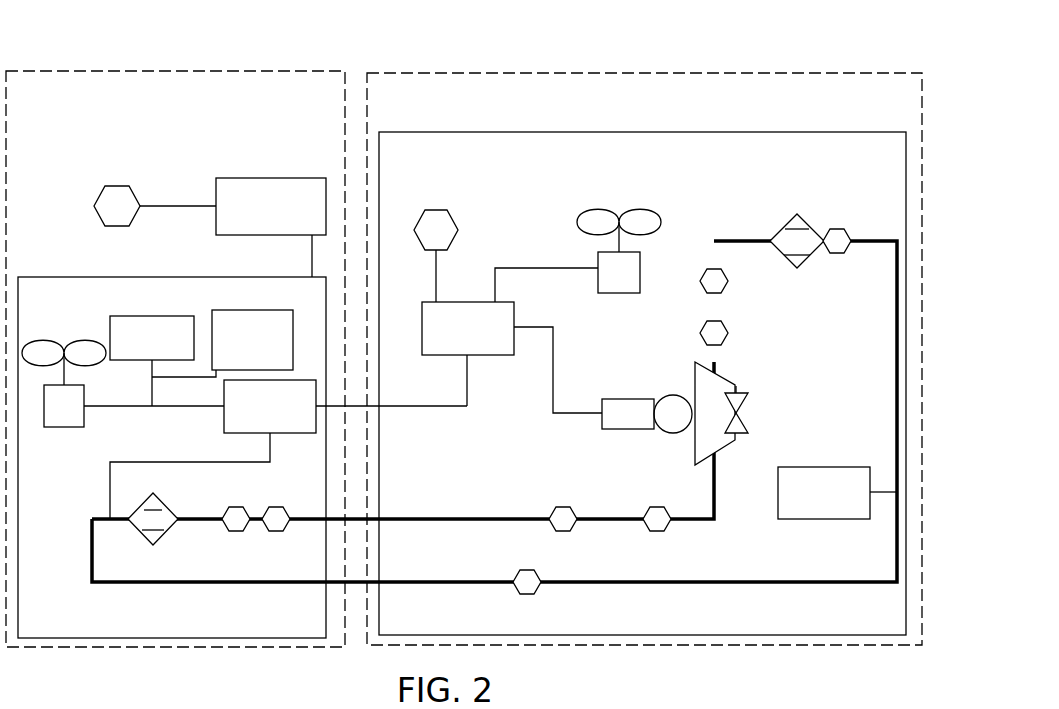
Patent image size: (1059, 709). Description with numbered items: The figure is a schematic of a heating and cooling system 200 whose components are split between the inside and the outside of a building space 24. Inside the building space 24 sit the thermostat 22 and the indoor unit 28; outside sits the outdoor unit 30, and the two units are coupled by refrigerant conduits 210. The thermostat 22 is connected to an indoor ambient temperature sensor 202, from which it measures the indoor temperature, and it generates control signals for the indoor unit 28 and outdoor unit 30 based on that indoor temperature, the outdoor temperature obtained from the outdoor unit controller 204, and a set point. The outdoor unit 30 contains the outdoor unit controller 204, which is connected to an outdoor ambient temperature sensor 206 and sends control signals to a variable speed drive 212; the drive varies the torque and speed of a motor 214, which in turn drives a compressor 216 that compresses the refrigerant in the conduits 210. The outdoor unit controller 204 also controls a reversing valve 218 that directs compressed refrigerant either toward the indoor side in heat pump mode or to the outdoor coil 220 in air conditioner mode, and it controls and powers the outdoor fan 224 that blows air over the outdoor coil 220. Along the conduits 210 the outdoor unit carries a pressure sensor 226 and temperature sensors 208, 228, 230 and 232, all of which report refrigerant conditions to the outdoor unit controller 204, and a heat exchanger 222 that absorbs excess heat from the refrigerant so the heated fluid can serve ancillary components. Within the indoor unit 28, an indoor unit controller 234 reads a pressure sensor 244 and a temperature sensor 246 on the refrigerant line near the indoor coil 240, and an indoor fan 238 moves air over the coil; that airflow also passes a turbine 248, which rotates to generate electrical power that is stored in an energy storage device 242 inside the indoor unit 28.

The building space 24 is at (247, 72).
The thermostat 22 is at (186, 180).
The indoor ambient temperature sensor 202 is at (98, 205).
The indoor unit 28 is at (24, 278).
The turbine 248 is at (133, 316).
The energy storage device 242 is at (243, 308).
The indoor fan 238 is at (80, 414).
The indoor unit controller 234 is at (305, 433).
The indoor coil 240 is at (148, 498).
The pressure sensor 244 is at (233, 528).
The temperature sensor 246 is at (272, 509).
The HVAC system 200 is at (823, 62).
The outdoor unit 30 is at (500, 133).
The outdoor ambient temperature sensor 206 is at (455, 224).
The outdoor unit controller 204 is at (448, 355).
The outdoor fan 224 is at (608, 293).
The variable speed drive 212 is at (628, 431).
The motor 214 is at (676, 433).
The compressor 216 is at (727, 386).
The reversing valve 218 is at (740, 436).
The temperature sensor 232 is at (712, 325).
The outdoor coil 220 is at (801, 268).
The temperature sensor 208 is at (838, 253).
The heat exchanger 222 is at (810, 467).
The conduits 210 is at (716, 503).
The pressure sensor 226 is at (561, 509).
The temperature sensor 228 is at (655, 509).
The temperature sensor 230 is at (522, 572).